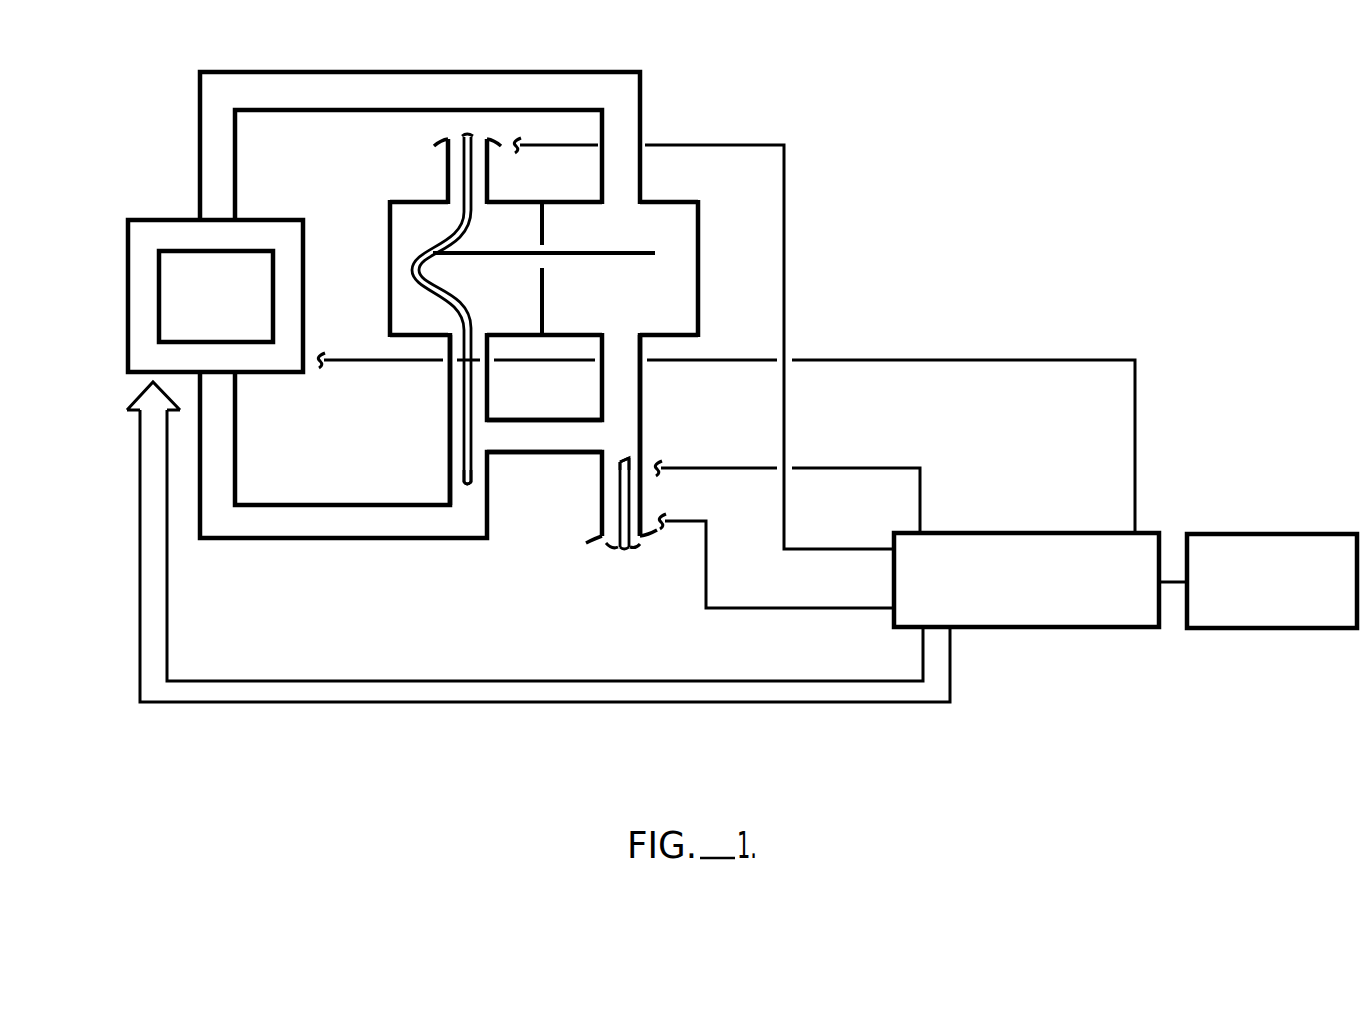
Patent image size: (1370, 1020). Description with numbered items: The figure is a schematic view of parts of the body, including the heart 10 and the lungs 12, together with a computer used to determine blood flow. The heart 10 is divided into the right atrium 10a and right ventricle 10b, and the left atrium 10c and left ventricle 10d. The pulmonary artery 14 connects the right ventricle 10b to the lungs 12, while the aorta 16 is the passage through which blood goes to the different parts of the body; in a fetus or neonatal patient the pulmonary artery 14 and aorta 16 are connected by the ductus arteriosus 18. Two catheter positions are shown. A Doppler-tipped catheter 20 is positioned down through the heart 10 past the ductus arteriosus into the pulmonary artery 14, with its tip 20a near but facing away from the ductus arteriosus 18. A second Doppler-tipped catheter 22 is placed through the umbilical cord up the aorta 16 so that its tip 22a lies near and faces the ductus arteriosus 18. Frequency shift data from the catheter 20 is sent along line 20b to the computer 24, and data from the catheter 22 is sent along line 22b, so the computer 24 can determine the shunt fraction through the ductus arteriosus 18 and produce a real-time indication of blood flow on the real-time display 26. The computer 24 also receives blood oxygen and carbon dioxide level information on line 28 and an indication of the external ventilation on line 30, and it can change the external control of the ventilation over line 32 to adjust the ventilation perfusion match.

The heart 10 is at (400, 200).
The right atrium 10a is at (399, 222).
The right ventricle 10b is at (399, 302).
The left atrium 10c is at (678, 230).
The left ventricle 10d is at (677, 305).
The lungs 12 is at (150, 220).
The pulmonary artery 14 is at (453, 378).
The aorta 16 is at (625, 388).
The ductus arteriosus 18 is at (570, 445).
The Doppler-tipped catheter 20 is at (460, 418).
The tip of the Doppler-tipped catheter 20a is at (458, 473).
The line 20b is at (784, 143).
The Doppler-tipped catheter 22 is at (617, 510).
The tip of the Doppler-tipped catheter 22a is at (623, 460).
The line 22b is at (690, 528).
The computer 24 is at (1113, 622).
The real-time display 26 is at (1313, 624).
The line 28 is at (685, 470).
The line 30 is at (1137, 405).
The line 32 is at (850, 705).